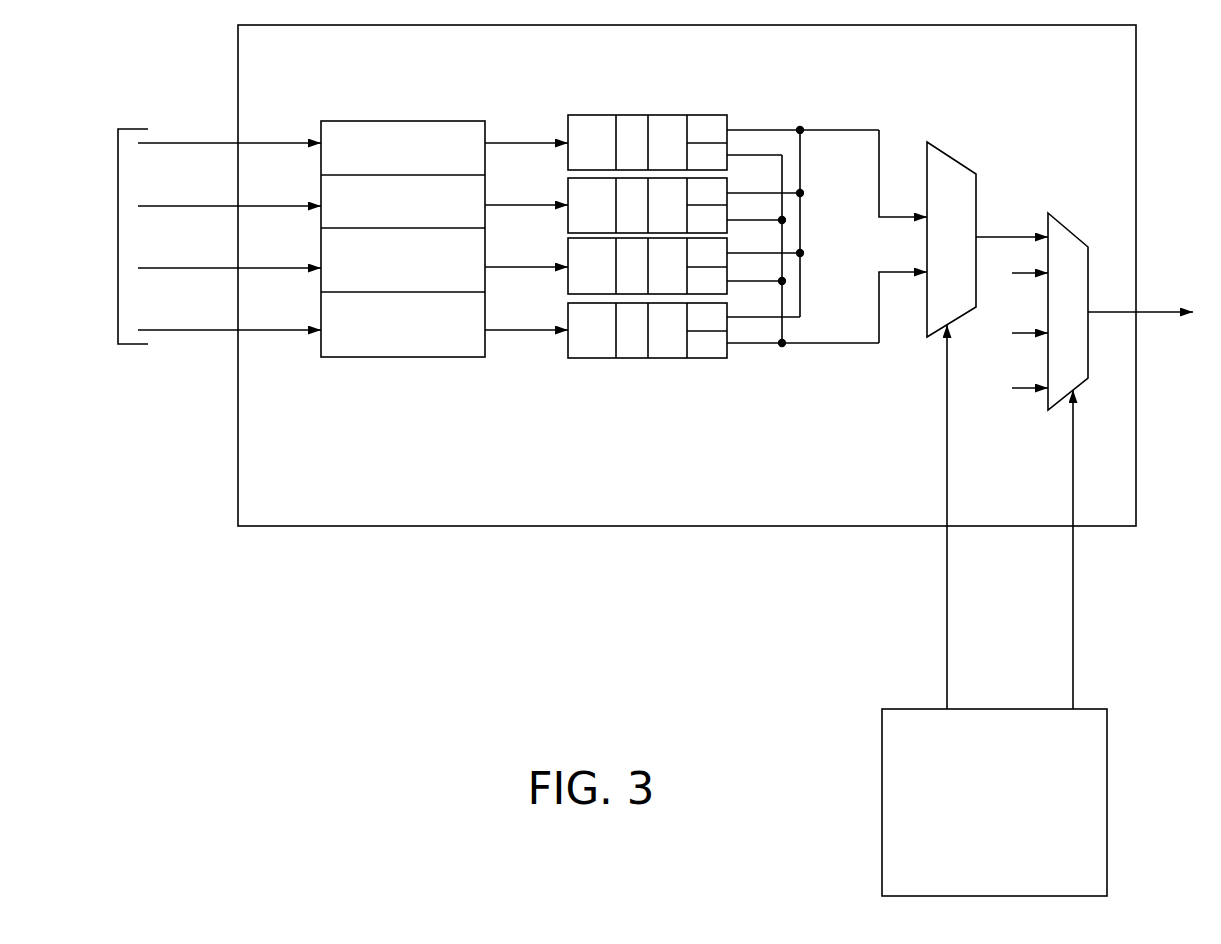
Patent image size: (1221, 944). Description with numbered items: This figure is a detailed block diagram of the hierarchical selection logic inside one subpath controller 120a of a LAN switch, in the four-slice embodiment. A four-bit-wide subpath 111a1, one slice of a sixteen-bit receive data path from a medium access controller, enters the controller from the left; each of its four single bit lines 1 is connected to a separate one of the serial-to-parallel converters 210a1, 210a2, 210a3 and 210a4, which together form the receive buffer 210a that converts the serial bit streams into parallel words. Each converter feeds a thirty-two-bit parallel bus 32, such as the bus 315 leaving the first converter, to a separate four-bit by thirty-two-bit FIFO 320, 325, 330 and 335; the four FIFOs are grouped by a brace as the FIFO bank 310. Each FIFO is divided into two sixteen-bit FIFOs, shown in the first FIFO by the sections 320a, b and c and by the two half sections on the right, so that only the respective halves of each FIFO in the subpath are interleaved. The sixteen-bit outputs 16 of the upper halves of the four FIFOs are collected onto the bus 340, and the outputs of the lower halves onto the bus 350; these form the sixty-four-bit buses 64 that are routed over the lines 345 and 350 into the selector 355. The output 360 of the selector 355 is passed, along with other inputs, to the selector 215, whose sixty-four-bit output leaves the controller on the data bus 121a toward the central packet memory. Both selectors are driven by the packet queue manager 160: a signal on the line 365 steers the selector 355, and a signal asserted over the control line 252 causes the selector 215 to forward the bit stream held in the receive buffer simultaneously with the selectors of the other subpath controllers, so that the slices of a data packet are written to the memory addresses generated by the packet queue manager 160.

The subpath 111a1 is at (93, 236).
The bit line 1 is at (264, 155).
The receive buffer 210a is at (403, 205).
The serial-to-parallel converter 210a1 is at (403, 156).
The serial-to-parallel converter 210a2 is at (403, 213).
The serial-to-parallel converter 210a3 is at (403, 272).
The serial-to-parallel converter 210a4 is at (403, 327).
The 32-bit parallel bus 32 is at (505, 157).
The data path 315 is at (547, 140).
The FIFO 320 is at (647, 121).
The register field 320a is at (591, 143).
The FIFO 325 is at (568, 184).
The FIFO 330 is at (568, 280).
The FIFO 335 is at (568, 345).
The register bank 310 is at (650, 246).
The d1 bus 340 is at (777, 130).
The d2 bus 350 is at (879, 290).
The bus to multiplexer 345 is at (851, 130).
The 16-bit FIFO output 16 is at (745, 140).
The 64-bit bus 64 is at (815, 141).
The multiplexer 355 is at (935, 240).
The multiplexer output 360 is at (988, 242).
The selector 215 is at (1052, 316).
The data bus 121a is at (1173, 318).
The subpath controller 120a is at (820, 498).
The select line 365 is at (947, 648).
The control line 252 is at (1073, 640).
The packet queue manager 160 is at (1009, 833).